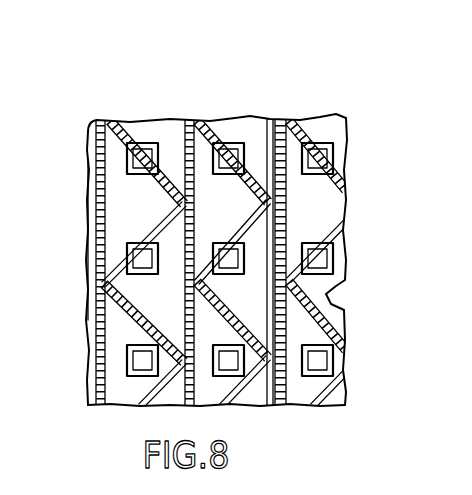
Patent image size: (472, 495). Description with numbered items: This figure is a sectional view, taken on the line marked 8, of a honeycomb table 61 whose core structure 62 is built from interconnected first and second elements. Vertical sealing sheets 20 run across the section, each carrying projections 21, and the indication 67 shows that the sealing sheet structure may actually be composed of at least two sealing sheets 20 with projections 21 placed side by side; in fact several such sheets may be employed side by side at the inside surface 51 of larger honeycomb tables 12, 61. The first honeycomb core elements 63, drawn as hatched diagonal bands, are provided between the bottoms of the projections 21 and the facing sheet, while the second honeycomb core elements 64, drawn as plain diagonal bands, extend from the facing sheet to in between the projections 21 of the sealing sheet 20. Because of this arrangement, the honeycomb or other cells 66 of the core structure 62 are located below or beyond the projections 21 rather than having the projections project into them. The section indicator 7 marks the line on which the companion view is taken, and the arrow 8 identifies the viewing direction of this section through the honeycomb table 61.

The honeycomb table 12 is at (344, 298).
The sealing sheet 20 is at (98, 263).
The projections 21 is at (237, 121).
The inside surface 51 is at (288, 120).
The honeycomb table 61 is at (74, 240).
The honeycomb core 62 is at (357, 236).
The first honeycomb core elements 63 is at (120, 137).
The second honeycomb core elements 64 is at (96, 159).
The honeycomb cells 66 is at (139, 218).
The sealing sheet structure composed of at least two sealing sheets 67 is at (272, 120).
The section line 7- 7 is at (72, 355).
The section line 8- 8 is at (471, 170).